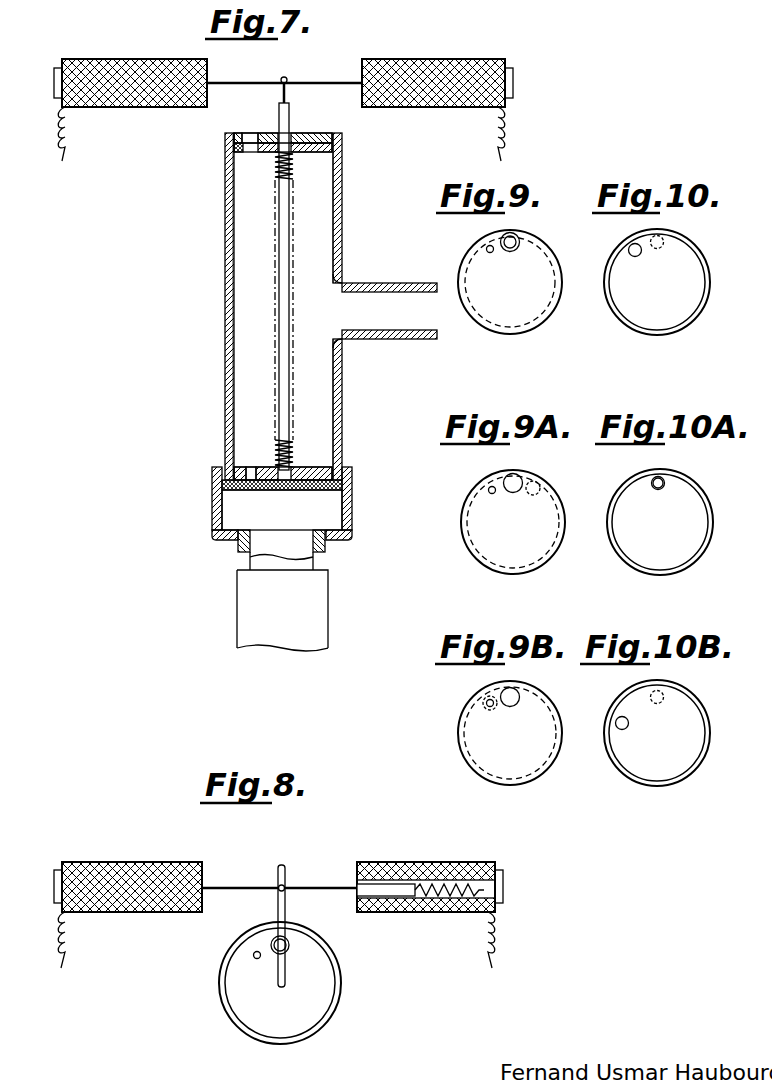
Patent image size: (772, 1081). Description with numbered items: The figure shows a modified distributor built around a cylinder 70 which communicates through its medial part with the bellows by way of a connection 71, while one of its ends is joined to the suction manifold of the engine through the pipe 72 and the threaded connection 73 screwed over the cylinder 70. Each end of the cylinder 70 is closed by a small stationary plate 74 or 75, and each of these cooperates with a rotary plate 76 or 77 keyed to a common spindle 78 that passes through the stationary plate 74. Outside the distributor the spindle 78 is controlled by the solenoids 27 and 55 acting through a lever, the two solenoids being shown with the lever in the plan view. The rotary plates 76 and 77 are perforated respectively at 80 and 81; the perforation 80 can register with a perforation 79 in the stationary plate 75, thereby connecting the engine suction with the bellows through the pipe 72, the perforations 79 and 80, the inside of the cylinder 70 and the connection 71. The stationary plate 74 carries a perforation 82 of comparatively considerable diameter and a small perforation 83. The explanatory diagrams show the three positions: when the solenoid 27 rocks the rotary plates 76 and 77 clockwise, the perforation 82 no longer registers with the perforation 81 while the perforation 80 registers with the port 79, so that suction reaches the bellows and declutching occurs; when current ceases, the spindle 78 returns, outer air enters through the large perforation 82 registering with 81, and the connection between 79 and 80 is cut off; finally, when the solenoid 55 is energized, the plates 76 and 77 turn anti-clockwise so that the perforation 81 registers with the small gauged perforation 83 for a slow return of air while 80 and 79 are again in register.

In FIG. 7, the solenoid 55 is at (125, 60).
In FIG. 8, the solenoid 55 is at (128, 862).
In FIG. 7, the solenoid 27 is at (447, 48).
In FIG. 8, the solenoid 27 is at (418, 848).
In FIG. 7, the cylinder 70 is at (343, 209).
In FIG. 8, the cylinder 70 is at (220, 1000).
In FIG. 7, the connection 71 is at (385, 283).
In FIG. 7, the pipe 72 is at (248, 610).
In FIG. 7, the threaded connection 73 is at (352, 501).
In FIG. 7, the stationary plate 74 is at (313, 140).
In FIG. 9, the stationary plate 74 is at (490, 312).
In FIG. 9A, the stationary plate 74 is at (480, 538).
In FIG. 9B, the stationary plate 74 is at (478, 752).
In FIG. 8, the stationary plate 74 is at (320, 1000).
In FIG. 7, the stationary plate 75 is at (225, 493).
In FIG. 10, the stationary plate 75 is at (605, 290).
In FIG. 10A, the stationary plate 75 is at (612, 552).
In FIG. 10B, the stationary plate 75 is at (612, 768).
In FIG. 7, the rotary plate 76 is at (322, 467).
In FIG. 10, the rotary plate 76 is at (637, 330).
In FIG. 10A, the rotary plate 76 is at (640, 570).
In FIG. 10B, the rotary plate 76 is at (634, 778).
In FIG. 7, the rotary plate 77 is at (340, 162).
In FIG. 9, the rotary plate 77 is at (538, 325).
In FIG. 9A, the rotary plate 77 is at (545, 560).
In FIG. 9B, the rotary plate 77 is at (540, 773).
In FIG. 7, the spindle 78 is at (284, 300).
In FIG. 8, the spindle 78 is at (278, 918).
In FIG. 7, the perforation 79 is at (283, 490).
In FIG. 10, the perforation 79 is at (658, 249).
In FIG. 10A, the perforation 79 is at (658, 490).
In FIG. 10B, the perforation 79 is at (660, 703).
In FIG. 7, the perforation 80 is at (250, 467).
In FIG. 10, the perforation 80 is at (630, 250).
In FIG. 10A, the perforation 80 is at (658, 483).
In FIG. 10B, the perforation 80 is at (627, 727).
In FIG. 7, the perforation 81 is at (243, 151).
In FIG. 9, the perforation 81 is at (507, 249).
In FIG. 9A, the perforation 81 is at (540, 485).
In FIG. 9B, the perforation 81 is at (490, 710).
In FIG. 7, the perforation 82 is at (247, 140).
In FIG. 9, the perforation 82 is at (514, 252).
In FIG. 9A, the perforation 82 is at (512, 492).
In FIG. 9B, the perforation 82 is at (520, 696).
In FIG. 8, the perforation 82 is at (280, 945).
In FIG. 9, the small perforation 83 is at (487, 249).
In FIG. 9A, the small perforation 83 is at (488, 490).
In FIG. 9B, the small perforation 83 is at (487, 701).
In FIG. 8, the small perforation 83 is at (254, 955).